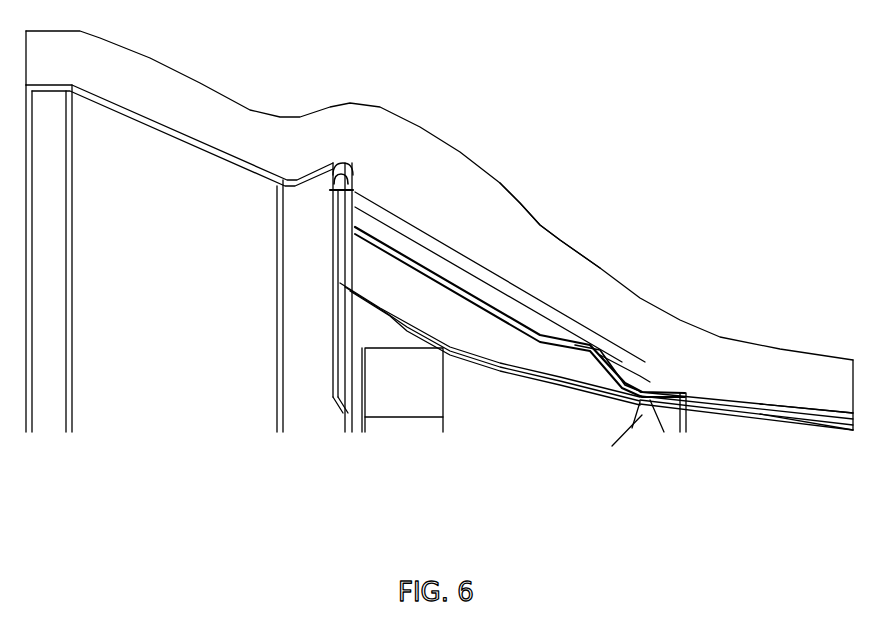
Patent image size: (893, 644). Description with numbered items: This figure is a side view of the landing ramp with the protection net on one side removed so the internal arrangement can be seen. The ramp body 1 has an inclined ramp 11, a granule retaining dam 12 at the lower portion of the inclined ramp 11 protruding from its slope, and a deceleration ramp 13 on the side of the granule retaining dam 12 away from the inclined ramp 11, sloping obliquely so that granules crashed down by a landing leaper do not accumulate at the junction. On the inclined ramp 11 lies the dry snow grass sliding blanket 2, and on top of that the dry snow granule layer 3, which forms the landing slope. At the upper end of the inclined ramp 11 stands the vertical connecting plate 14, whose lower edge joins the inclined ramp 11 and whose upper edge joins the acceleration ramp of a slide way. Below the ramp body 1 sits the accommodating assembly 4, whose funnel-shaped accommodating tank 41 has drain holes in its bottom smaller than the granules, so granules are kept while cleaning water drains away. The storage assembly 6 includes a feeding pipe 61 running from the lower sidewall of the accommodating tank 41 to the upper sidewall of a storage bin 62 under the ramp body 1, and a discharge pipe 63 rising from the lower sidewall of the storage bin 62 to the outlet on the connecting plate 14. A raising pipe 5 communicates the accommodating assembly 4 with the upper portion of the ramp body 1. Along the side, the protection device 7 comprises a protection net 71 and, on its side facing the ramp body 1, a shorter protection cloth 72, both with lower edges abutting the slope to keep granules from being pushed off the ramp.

The ramp body 1 is at (740, 473).
The deceleration ramp 13 is at (790, 414).
The dry snow grass sliding blanket 2 is at (467, 302).
The dry snow granule layer 3 is at (475, 287).
The accommodating assembly 4 is at (600, 473).
The accommodating tank 41 is at (597, 438).
The raising pipe 5 is at (478, 353).
The storage assembly 6 is at (412, 473).
The feeding pipe 61 is at (525, 391).
The storage bin 62 is at (405, 418).
The discharge pipe 63 is at (338, 402).
The protection device 7 is at (577, 156).
The protection net 71 is at (545, 228).
The protection cloth 72 is at (453, 245).
The inclined ramp 11 is at (433, 280).
The granule retaining dam 12 is at (600, 353).
The connecting plate 14 is at (355, 178).